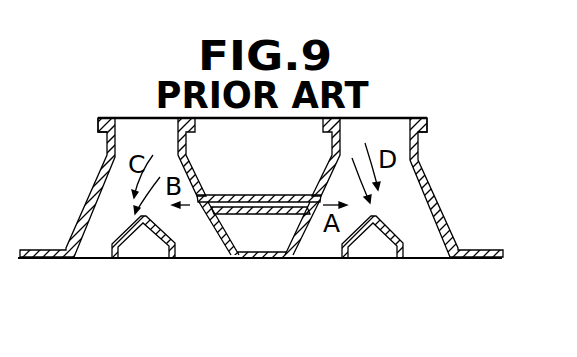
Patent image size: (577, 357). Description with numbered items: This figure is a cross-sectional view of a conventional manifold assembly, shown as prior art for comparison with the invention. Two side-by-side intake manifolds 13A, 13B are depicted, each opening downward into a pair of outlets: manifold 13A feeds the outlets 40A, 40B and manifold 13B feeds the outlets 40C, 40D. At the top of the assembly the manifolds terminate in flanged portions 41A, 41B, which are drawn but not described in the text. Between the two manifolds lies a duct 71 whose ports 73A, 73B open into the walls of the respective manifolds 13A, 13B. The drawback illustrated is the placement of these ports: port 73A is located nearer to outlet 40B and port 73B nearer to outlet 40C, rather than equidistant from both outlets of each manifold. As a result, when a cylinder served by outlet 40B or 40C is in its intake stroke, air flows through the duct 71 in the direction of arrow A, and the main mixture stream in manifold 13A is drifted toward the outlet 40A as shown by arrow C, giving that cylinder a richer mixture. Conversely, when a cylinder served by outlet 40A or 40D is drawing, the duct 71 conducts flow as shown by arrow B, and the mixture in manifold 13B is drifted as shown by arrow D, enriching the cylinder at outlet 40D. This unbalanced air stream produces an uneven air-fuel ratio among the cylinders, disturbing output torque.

The left flange 41A is at (127, 117).
The right flange 41B is at (398, 118).
The manifold 13A is at (112, 180).
The manifold 13B is at (427, 191).
The duct 71 is at (260, 196).
The port 73A is at (195, 195).
The port 73B is at (323, 194).
The outlet 40A is at (97, 258).
The outlet 40B is at (203, 258).
The outlet 40C is at (333, 258).
The outlet 40D is at (438, 260).